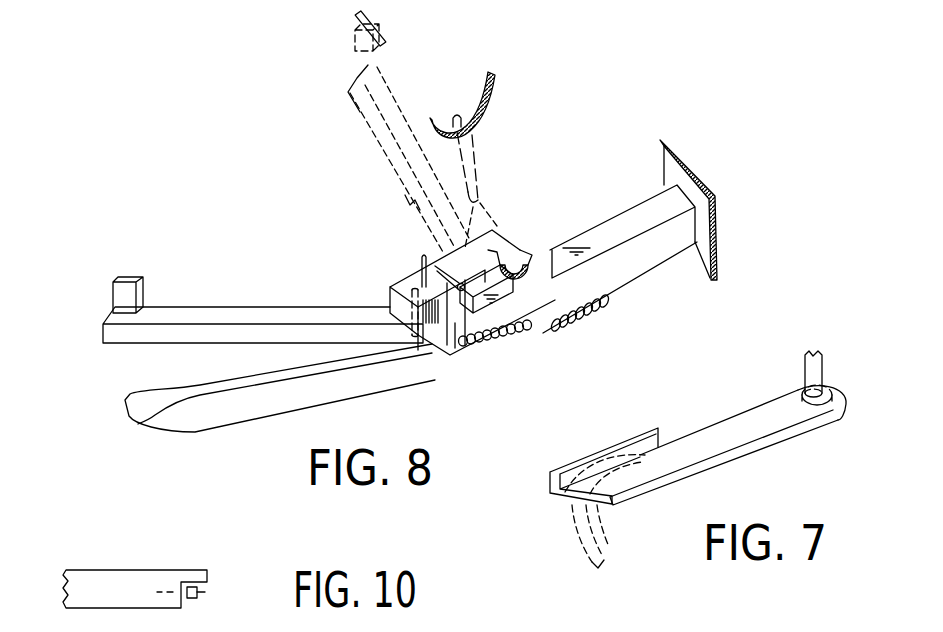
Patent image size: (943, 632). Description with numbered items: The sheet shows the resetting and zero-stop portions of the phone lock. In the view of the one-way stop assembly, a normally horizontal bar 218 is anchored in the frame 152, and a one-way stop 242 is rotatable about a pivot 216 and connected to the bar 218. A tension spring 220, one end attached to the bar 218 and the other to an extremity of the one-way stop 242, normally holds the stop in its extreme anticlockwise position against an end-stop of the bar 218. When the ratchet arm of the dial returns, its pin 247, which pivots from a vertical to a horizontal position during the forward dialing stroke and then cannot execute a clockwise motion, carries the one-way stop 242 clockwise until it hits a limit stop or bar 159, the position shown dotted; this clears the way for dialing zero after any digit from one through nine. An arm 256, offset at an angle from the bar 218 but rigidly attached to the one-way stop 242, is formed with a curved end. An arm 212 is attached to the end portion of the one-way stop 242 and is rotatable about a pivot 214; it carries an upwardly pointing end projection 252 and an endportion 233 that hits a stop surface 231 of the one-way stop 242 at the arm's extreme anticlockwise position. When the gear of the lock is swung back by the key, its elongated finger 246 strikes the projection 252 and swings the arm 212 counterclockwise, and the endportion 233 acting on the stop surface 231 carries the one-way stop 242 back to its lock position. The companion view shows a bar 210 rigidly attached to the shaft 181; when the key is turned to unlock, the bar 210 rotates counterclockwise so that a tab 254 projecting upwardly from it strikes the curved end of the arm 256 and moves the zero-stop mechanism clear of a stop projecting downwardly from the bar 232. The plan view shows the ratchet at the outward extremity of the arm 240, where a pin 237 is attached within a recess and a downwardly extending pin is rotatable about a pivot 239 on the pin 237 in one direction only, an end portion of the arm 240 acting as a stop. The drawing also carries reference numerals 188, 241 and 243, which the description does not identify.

In FIG. 8, the frame 152 is at (668, 143).
In FIG. 8, the limit stop bar 159 is at (478, 132).
In FIG. 7, the shaft 181 is at (822, 358).
In FIG. 7, the boss ring 188 is at (832, 394).
In FIG. 7, the bar 210 is at (763, 434).
In FIG. 8, the arm 212 is at (291, 307).
In FIG. 8, the pivot 214 is at (390, 292).
In FIG. 8, the pivot 216 is at (515, 262).
In FIG. 8, the bar 218 is at (633, 280).
In FIG. 8, the tension spring 220 is at (602, 305).
In FIG. 8, the stop surface 231 is at (448, 338).
In FIG. 10, the bar 232 is at (202, 627).
In FIG. 8, the endportion 233 is at (428, 340).
In FIG. 10, the pin 237 is at (205, 591).
In FIG. 10, the pivot 239 is at (190, 586).
In FIG. 10, the arm 240 is at (146, 570).
In FIG. 8, the shelf 241 is at (503, 337).
In FIG. 8, the one-way stop 242 is at (490, 187).
In FIG. 8, the pin 243 is at (441, 262).
In FIG. 8, the elongated finger 246 is at (380, 34).
In FIG. 8, the pin 247 is at (424, 268).
In FIG. 8, the end projection 252 is at (136, 276).
In FIG. 7, the tab 254 is at (622, 444).
In FIG. 8, the arm 256 is at (272, 380).
In FIG. 7, the arm 256 is at (602, 529).